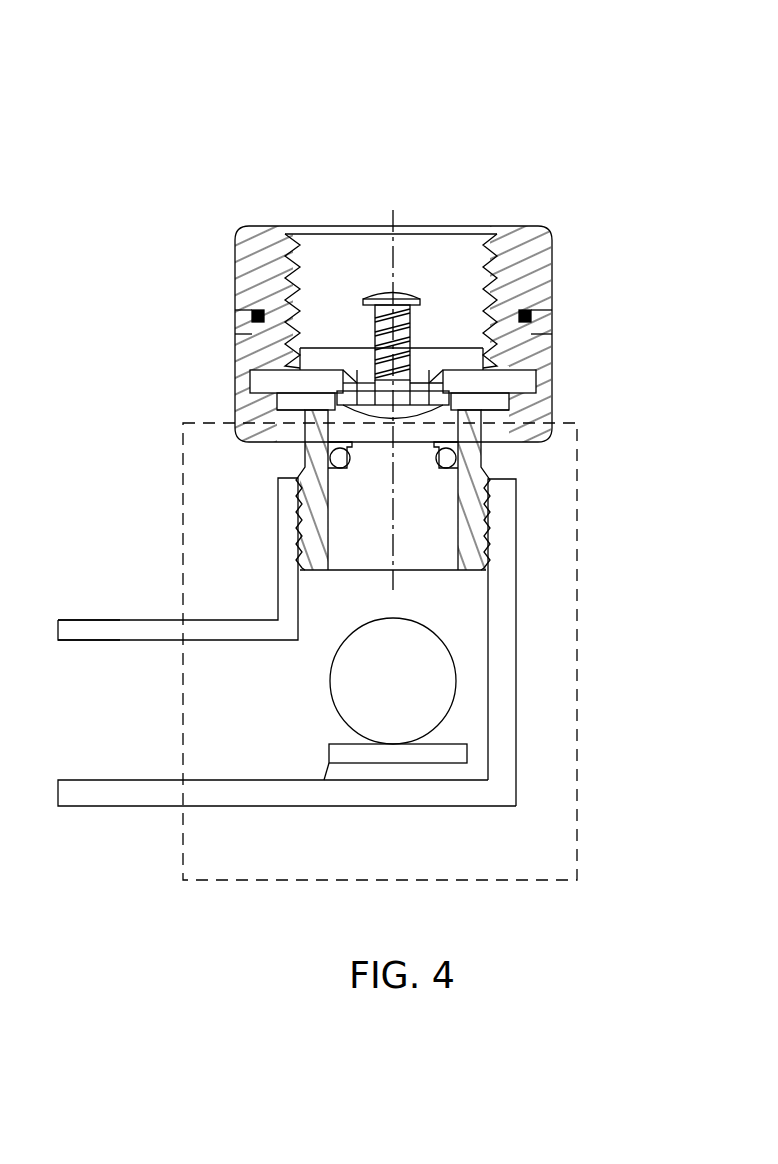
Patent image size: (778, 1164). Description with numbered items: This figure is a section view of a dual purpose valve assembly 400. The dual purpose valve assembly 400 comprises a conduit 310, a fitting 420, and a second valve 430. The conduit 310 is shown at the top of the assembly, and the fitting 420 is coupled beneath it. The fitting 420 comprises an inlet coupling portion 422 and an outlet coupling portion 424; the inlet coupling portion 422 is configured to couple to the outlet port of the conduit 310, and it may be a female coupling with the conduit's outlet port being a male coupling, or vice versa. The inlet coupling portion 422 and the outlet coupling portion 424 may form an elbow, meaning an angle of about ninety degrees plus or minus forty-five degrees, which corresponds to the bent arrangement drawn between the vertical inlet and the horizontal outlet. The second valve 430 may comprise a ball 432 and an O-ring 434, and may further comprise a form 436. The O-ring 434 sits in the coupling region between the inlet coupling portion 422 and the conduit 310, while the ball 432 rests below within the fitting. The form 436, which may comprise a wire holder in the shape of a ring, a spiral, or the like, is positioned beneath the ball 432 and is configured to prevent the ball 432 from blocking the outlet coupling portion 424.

The dual purpose valve assembly 400 is at (136, 128).
The conduit 310 is at (263, 298).
The inlet coupling portion 422 is at (283, 515).
The fitting 420 is at (178, 540).
The outlet coupling portion 424 is at (95, 635).
The O-ring 434 is at (447, 460).
The second valve 430 is at (522, 718).
The ball 432 is at (398, 652).
The form 436 is at (342, 748).